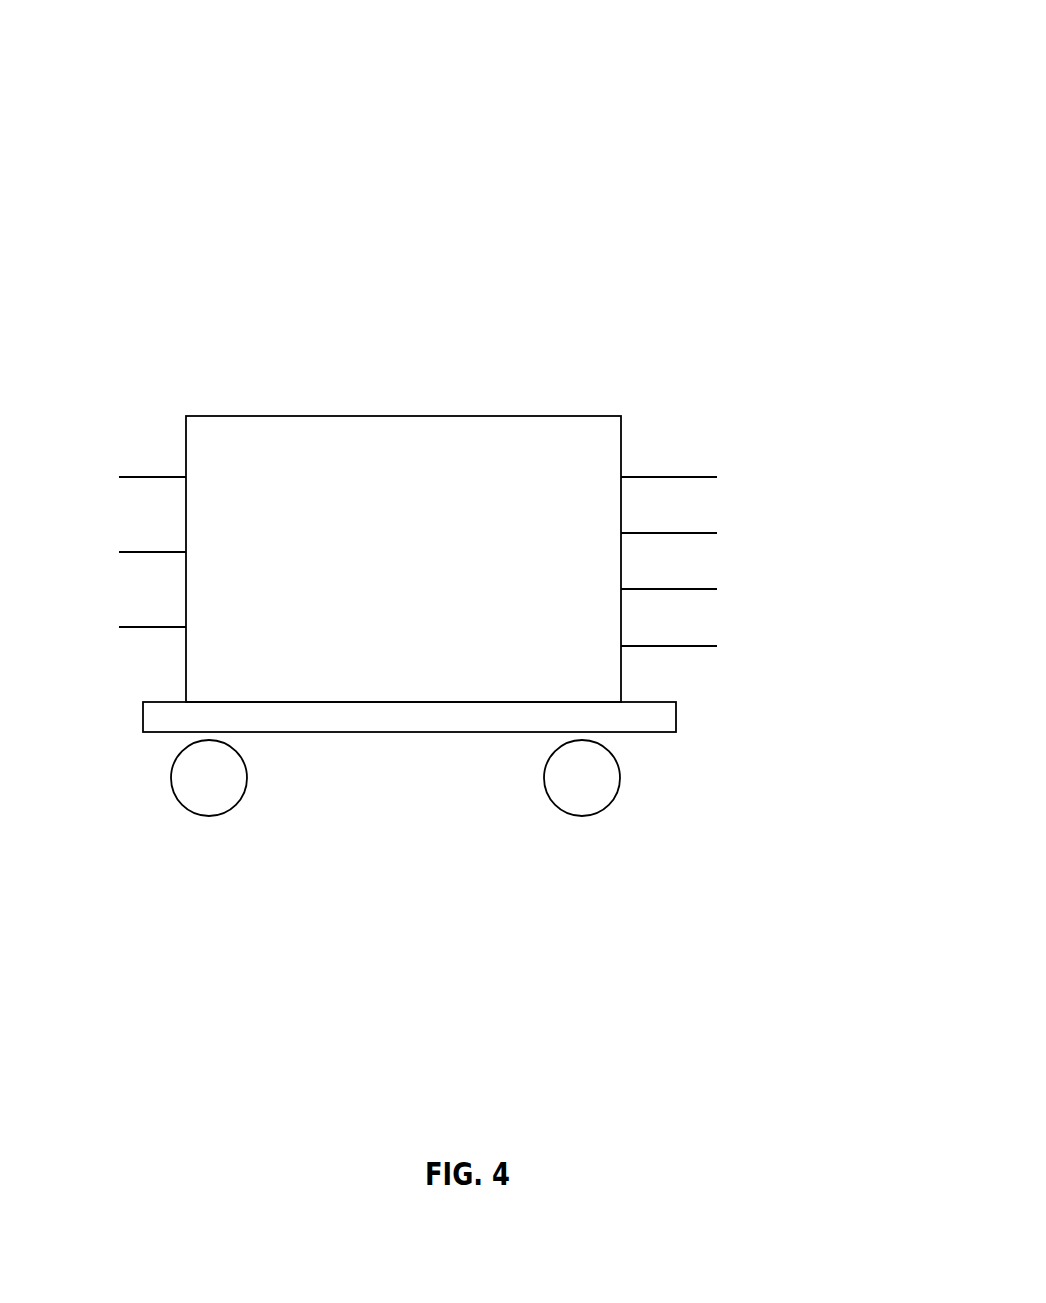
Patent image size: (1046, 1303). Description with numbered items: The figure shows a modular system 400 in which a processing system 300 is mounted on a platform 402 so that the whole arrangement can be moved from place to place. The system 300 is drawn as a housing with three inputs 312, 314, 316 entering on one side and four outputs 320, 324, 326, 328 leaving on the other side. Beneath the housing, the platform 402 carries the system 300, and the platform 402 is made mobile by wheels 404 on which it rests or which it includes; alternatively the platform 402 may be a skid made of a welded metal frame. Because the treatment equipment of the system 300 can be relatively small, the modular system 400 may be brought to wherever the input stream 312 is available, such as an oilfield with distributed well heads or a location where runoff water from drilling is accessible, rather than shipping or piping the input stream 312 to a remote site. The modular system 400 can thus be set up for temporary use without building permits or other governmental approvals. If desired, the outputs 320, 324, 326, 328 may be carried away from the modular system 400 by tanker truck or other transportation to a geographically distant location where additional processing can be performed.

The modular system 400 is at (390, 177).
The system 300 is at (474, 416).
The input stream 312 is at (157, 477).
The input 314 is at (157, 552).
The input 316 is at (157, 627).
The output 320 is at (661, 477).
The output 324 is at (680, 533).
The output 326 is at (680, 589).
The output 328 is at (680, 646).
The platform 402 is at (676, 722).
The wheels 404 is at (620, 778).